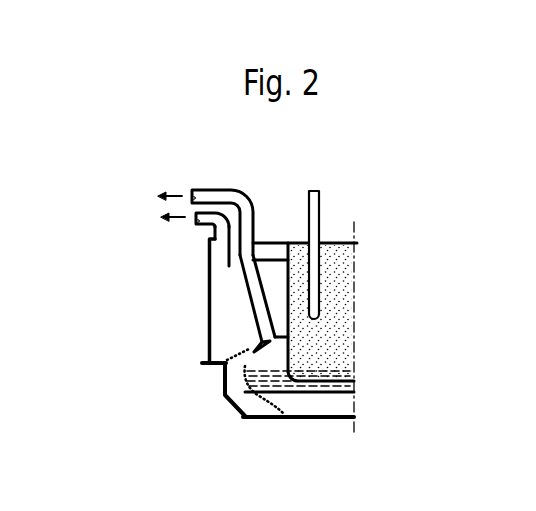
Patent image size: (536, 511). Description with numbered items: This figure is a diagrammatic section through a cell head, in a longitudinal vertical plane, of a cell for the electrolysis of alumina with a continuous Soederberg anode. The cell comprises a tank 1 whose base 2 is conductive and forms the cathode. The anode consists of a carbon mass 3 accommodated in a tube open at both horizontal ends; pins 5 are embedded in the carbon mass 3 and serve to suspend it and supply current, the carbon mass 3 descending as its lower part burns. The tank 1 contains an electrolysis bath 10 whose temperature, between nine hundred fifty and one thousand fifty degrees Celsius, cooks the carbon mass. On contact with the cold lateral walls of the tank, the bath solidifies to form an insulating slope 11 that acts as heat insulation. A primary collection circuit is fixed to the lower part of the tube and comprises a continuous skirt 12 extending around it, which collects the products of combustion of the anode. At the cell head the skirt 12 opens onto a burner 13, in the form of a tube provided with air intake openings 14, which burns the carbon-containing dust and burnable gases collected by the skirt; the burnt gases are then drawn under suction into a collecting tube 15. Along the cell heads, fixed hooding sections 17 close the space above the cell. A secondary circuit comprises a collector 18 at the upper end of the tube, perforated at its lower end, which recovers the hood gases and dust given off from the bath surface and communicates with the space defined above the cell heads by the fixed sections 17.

The tank 1 is at (232, 403).
The base 2 is at (307, 420).
The carbon mass 3 is at (330, 343).
The pins 5 is at (315, 210).
The electrolysis bath 10 is at (333, 390).
The insulating slope 11 is at (222, 366).
The skirt 12 is at (252, 346).
The burner 13 is at (238, 265).
The air intake openings 14 is at (257, 310).
The collecting tube 15 is at (196, 247).
The fixed sections 17 is at (210, 284).
The collector 18 is at (195, 228).